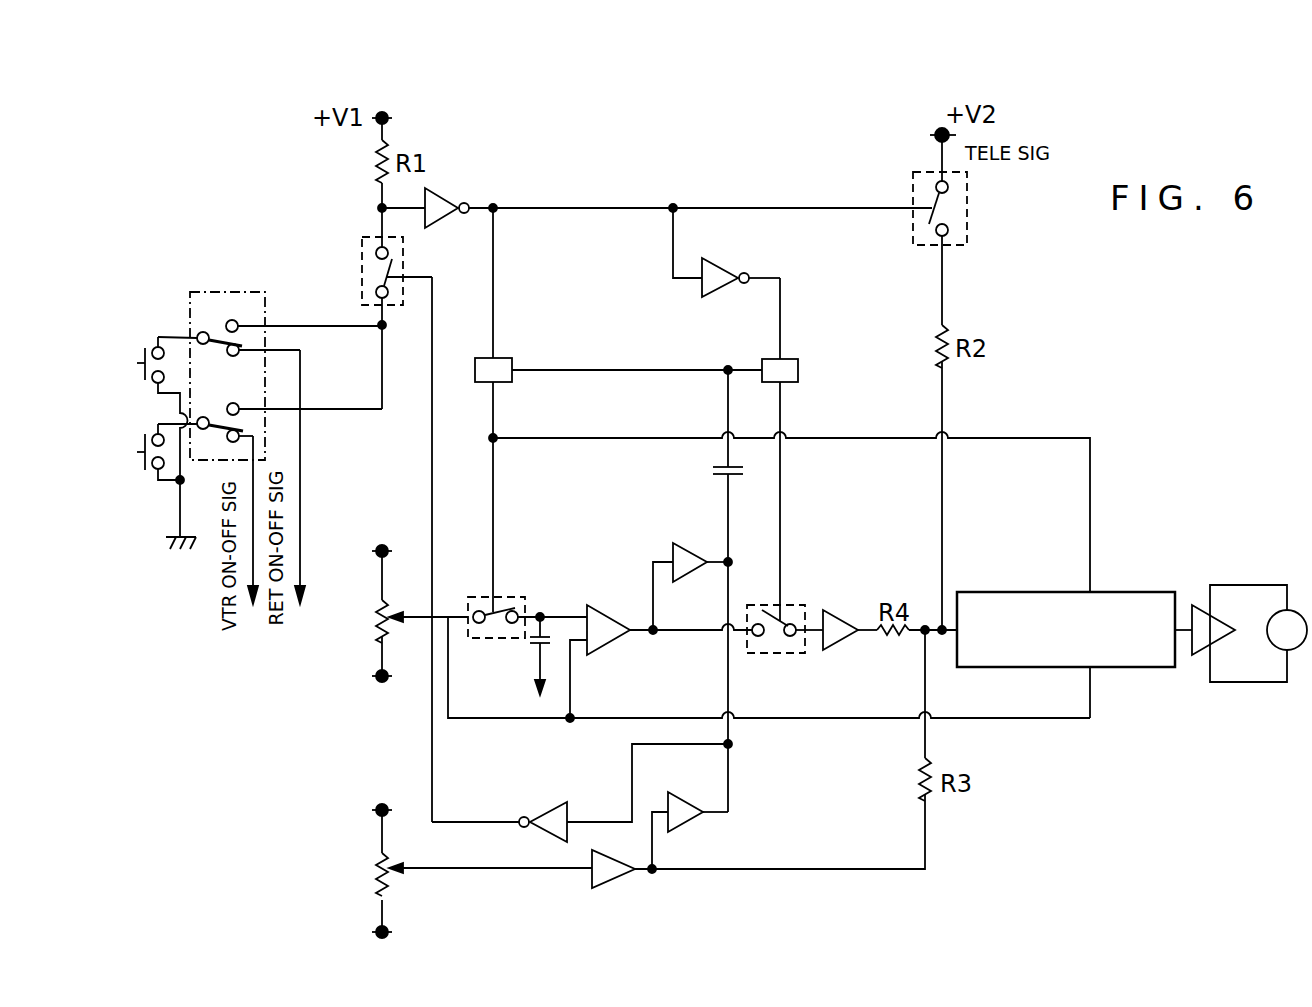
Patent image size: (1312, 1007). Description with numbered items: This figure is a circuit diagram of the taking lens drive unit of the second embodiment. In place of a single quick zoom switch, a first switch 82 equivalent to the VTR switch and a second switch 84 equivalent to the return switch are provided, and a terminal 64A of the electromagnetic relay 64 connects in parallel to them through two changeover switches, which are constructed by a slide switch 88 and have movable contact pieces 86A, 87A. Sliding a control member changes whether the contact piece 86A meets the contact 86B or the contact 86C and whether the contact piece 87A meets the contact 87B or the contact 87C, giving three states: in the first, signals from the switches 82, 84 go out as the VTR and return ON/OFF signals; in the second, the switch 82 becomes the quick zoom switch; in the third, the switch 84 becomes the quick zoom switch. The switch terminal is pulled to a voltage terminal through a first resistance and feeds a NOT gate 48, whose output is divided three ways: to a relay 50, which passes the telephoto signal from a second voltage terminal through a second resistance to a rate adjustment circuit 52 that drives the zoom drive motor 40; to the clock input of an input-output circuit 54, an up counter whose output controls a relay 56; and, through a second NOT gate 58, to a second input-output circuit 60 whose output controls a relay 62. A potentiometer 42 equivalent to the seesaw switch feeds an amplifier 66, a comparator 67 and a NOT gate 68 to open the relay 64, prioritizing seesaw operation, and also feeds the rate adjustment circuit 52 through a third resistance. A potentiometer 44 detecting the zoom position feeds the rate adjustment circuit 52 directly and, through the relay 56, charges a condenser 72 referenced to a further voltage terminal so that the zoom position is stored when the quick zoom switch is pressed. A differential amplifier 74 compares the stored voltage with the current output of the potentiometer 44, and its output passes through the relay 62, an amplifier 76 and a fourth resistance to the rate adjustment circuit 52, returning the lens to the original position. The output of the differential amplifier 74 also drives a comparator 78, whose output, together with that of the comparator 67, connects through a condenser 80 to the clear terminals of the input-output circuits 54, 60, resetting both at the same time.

The zoom drive motor 40 is at (1288, 608).
The potentiometer 42 is at (365, 850).
The potentiometer 44 is at (371, 640).
The NOT gate 48 is at (452, 190).
The relay 50 is at (913, 200).
The rate adjustment circuit 52 is at (1126, 565).
The input-output circuit 54 is at (498, 357).
The relay 56 is at (488, 597).
The second NOT gate 58 is at (700, 292).
The second input-output circuit 60 is at (786, 358).
The relay 62 is at (790, 605).
The electromagnetic relay 64 is at (372, 238).
The terminal 64A is at (390, 296).
The amplifier 66 is at (592, 882).
The comparator 67 is at (688, 822).
The NOT gate 68 is at (558, 804).
The condenser 72 is at (565, 630).
The differential amplifier 74 is at (612, 645).
The amplifier 76 is at (838, 645).
The comparator 78 is at (698, 572).
The condenser 80 is at (720, 470).
The switch SW1A 82 is at (152, 340).
The switch SW1B 84 is at (153, 474).
The movable contact piece 86A is at (197, 333).
The contact 86B is at (242, 348).
The contact 86C is at (238, 323).
The movable contact piece 87A is at (215, 432).
The contact 87B is at (243, 437).
The contact 87C is at (240, 408).
The slide switch 88 is at (233, 288).